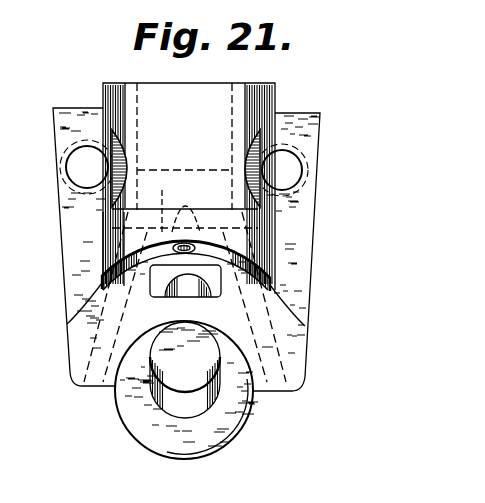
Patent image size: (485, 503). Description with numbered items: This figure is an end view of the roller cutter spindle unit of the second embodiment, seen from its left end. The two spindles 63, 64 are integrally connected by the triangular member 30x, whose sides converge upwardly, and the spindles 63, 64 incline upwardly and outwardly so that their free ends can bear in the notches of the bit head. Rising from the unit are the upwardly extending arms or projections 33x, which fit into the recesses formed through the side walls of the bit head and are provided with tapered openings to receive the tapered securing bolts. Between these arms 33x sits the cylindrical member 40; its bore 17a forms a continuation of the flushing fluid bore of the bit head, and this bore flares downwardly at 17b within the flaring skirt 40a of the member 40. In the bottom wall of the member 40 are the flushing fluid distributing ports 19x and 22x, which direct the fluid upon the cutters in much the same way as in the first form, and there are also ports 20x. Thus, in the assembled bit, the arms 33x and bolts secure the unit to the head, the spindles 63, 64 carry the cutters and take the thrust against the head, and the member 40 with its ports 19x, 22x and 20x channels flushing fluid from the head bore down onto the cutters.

The cylindrical member 40 is at (125, 100).
The flaring skirt 40a is at (112, 249).
The upwardly extending arms or projections 33x is at (70, 138).
The bore of the cylindrical member 17a is at (232, 112).
The downwardly flaring portion of the bore 17b is at (138, 193).
The flushing fluid distributing port 19x is at (177, 206).
The flushing fluid distributing port 22x is at (255, 265).
The spindle 63 is at (190, 283).
The port 20x is at (78, 372).
The triangular member 30x is at (236, 365).
The spindle 64 is at (168, 396).